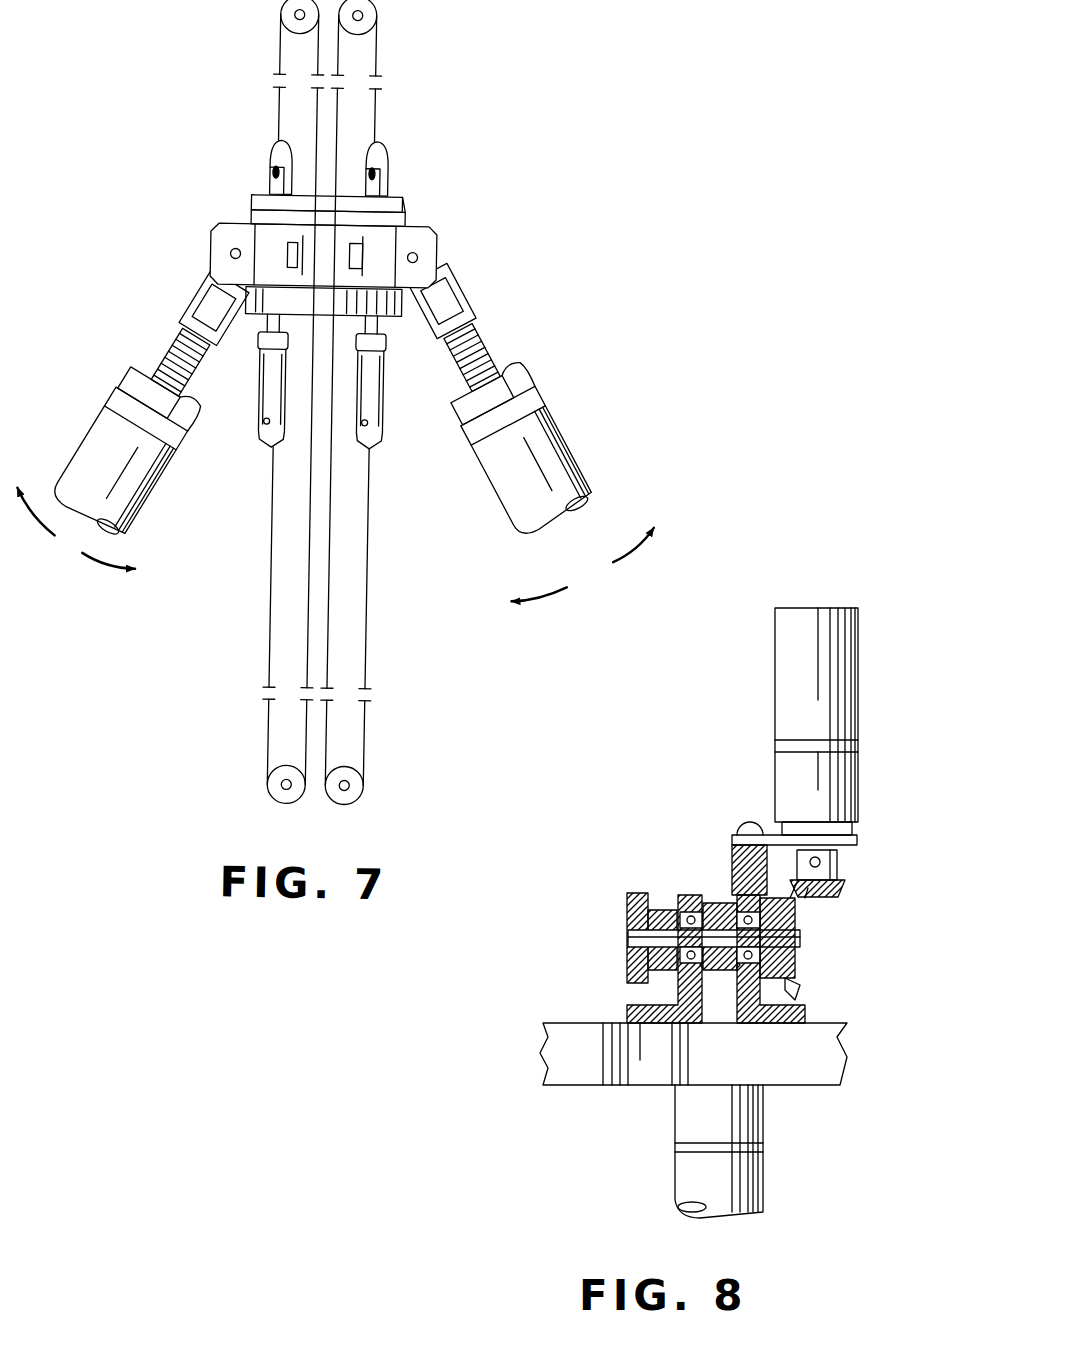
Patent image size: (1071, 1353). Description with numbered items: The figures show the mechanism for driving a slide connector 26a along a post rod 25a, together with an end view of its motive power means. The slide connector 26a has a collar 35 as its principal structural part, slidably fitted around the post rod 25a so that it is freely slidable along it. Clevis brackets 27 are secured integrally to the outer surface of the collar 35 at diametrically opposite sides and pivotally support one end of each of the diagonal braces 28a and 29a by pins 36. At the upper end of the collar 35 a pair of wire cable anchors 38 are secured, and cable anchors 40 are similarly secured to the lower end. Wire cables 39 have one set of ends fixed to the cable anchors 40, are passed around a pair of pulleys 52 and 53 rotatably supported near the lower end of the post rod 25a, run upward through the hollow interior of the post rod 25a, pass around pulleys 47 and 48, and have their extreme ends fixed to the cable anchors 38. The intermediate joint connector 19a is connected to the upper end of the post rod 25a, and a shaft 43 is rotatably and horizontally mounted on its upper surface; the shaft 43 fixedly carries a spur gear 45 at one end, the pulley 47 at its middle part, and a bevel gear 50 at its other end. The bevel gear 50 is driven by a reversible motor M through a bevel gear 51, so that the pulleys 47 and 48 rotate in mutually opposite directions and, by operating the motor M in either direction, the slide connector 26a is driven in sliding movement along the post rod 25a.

In FIG. 7, the pulley 47 is at (370, 15).
In FIG. 8, the pulley 47 is at (718, 905).
In FIG. 7, the pulley 48 is at (273, 15).
In FIG. 7, the wire cable 39 is at (274, 106).
In FIG. 7, the wire cable anchor 38 is at (266, 177).
In FIG. 7, the clevis bracket 27 is at (215, 240).
In FIG. 7, the collar 35 is at (389, 238).
In FIG. 7, the pin 36 is at (228, 257).
In FIG. 7, the slide connector 26a is at (249, 318).
In FIG. 7, the diagonal brace 28a is at (91, 446).
In FIG. 7, the diagonal brace 29a is at (564, 432).
In FIG. 7, the cable anchor 40 is at (263, 396).
In FIG. 7, the pulley 52 is at (372, 794).
In FIG. 7, the pulley 53 is at (275, 786).
In FIG. 8, the reversible motor M is at (790, 689).
In FIG. 8, the spur gear 45 is at (642, 893).
In FIG. 8, the shaft 43 is at (628, 942).
In FIG. 8, the bevel gear 51 is at (820, 882).
In FIG. 8, the bevel gear 50 is at (800, 955).
In FIG. 8, the intermediate joint connector 19a is at (556, 1046).
In FIG. 8, the post rod 25a is at (683, 1170).